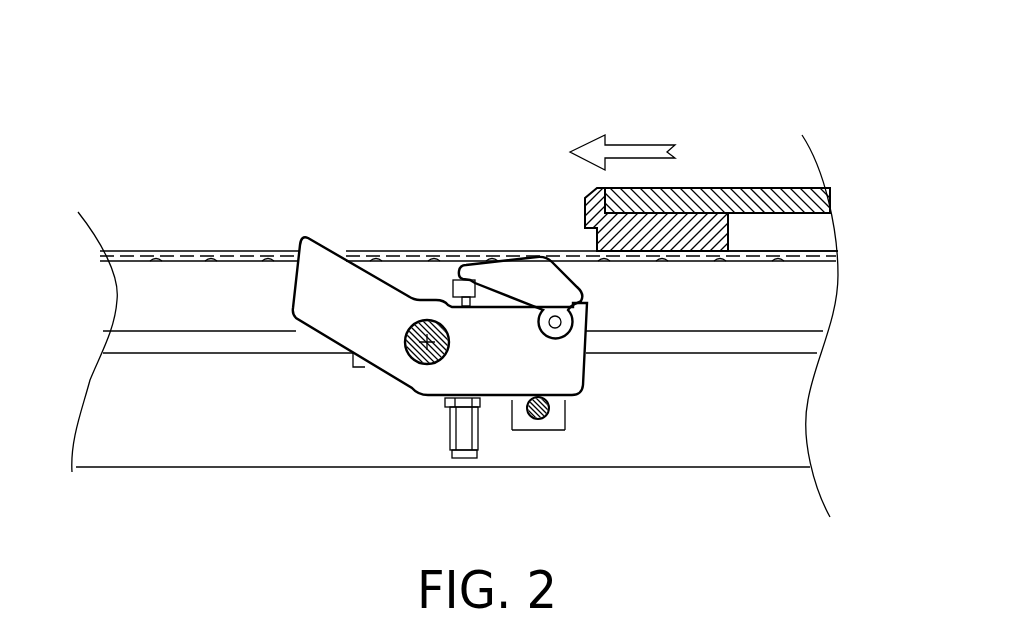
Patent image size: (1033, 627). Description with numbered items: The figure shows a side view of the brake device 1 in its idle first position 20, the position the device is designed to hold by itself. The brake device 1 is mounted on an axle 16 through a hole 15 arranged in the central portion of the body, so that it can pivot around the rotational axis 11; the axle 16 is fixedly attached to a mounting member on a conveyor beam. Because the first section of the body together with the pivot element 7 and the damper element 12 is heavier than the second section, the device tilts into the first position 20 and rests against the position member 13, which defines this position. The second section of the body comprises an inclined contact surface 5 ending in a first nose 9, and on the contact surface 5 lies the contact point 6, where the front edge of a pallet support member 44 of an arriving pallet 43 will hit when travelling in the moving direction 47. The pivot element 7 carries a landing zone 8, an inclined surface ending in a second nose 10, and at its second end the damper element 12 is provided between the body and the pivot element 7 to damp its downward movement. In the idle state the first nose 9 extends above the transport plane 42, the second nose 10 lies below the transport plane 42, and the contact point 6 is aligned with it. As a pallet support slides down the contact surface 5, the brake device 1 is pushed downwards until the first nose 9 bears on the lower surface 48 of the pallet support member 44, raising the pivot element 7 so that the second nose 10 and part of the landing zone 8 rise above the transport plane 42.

The brake device 1 is at (276, 89).
The first position 20 is at (216, 180).
The contact surface 5 is at (385, 279).
The contact point 6 is at (343, 254).
The pivot element 7 is at (495, 264).
The landing zone 8 is at (555, 268).
The first nose 9 is at (303, 237).
The second nose 10 is at (520, 273).
The rotational axis 11 is at (415, 363).
The damper element 12 is at (465, 437).
The position member 13 is at (530, 430).
The hole 15 is at (384, 347).
The axle 16 is at (409, 356).
The transport plane 42 is at (568, 258).
The pallet 43 is at (767, 203).
The pallet support member 44 is at (707, 217).
The moving direction 47 is at (637, 142).
The lower surface 48 is at (712, 258).